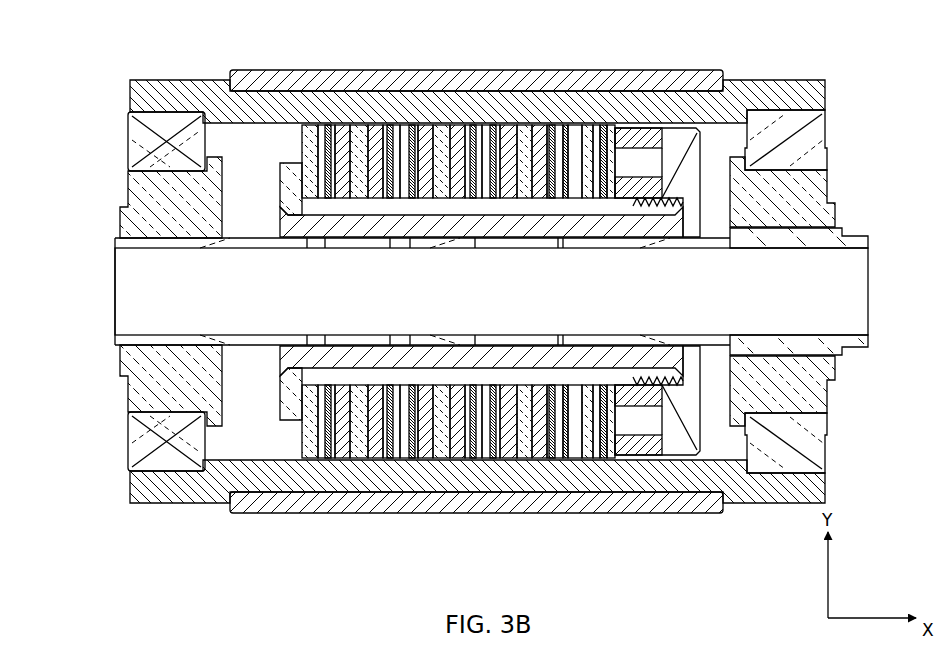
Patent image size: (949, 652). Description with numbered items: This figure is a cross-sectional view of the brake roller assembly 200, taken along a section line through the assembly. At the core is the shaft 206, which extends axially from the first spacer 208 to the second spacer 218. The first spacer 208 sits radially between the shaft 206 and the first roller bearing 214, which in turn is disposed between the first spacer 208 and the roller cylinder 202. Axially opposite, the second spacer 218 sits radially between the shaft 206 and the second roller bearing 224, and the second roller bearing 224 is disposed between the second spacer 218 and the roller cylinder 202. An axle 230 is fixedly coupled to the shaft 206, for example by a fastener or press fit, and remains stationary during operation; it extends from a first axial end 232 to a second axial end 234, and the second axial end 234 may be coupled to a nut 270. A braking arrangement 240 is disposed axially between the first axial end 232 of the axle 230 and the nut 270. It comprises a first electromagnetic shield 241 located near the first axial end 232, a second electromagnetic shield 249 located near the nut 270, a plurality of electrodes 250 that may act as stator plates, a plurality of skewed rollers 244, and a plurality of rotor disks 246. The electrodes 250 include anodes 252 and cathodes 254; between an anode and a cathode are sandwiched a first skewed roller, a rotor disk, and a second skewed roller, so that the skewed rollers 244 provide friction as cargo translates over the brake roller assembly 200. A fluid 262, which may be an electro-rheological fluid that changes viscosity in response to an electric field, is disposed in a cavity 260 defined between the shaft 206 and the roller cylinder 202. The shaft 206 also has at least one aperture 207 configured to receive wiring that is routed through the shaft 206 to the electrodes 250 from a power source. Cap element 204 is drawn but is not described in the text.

The brake roller assembly 200 is at (90, 57).
The roller cylinder 202 is at (787, 500).
The cap 204 is at (640, 513).
The shaft 206 is at (820, 345).
The aperture 207 is at (315, 250).
The first spacer 208 is at (152, 387).
The first roller bearing 214 is at (160, 448).
The second spacer 218 is at (807, 385).
The second roller bearing 224 is at (792, 443).
The axle 230 is at (282, 210).
The first axial end 232 is at (290, 185).
The second axial end 234 is at (687, 203).
The braking arrangement 240 is at (450, 95).
The first electromagnetic shield 241 is at (307, 123).
The skewed rollers 244 is at (340, 460).
The rotor disks 246 is at (357, 460).
The second electromagnetic shield 249 is at (568, 123).
The electrodes 250 is at (328, 123).
The anodes 252 is at (413, 384).
The cathodes 254 is at (472, 384).
The cavity 260 is at (263, 433).
The fluid 262 is at (272, 161).
The nut 270 is at (685, 155).